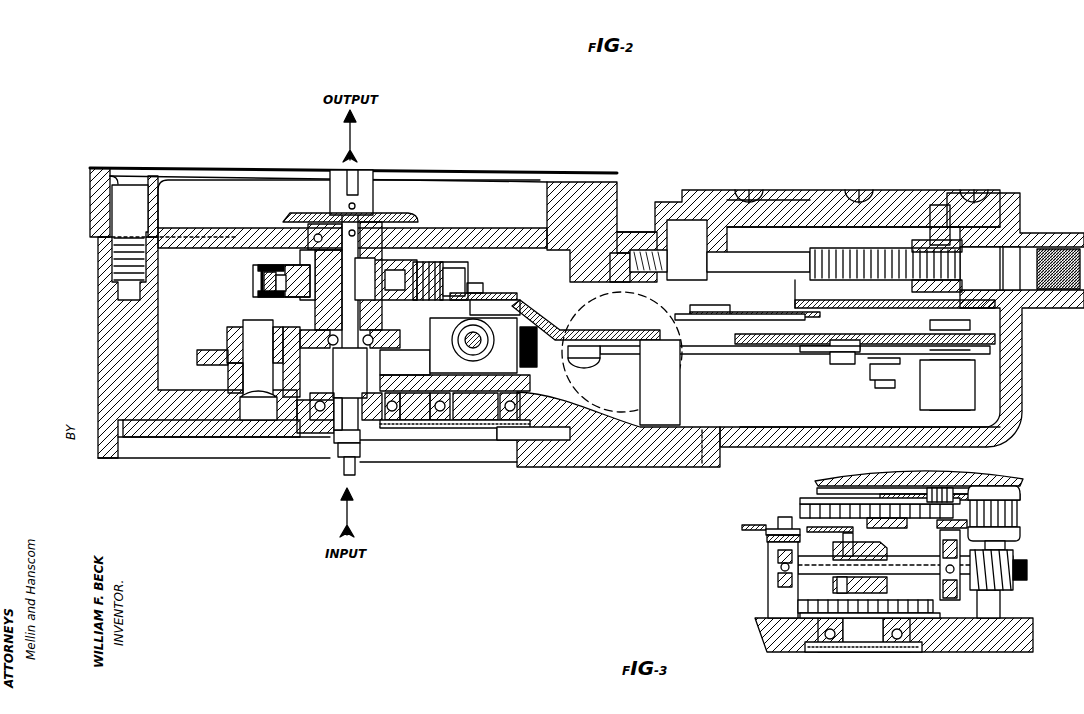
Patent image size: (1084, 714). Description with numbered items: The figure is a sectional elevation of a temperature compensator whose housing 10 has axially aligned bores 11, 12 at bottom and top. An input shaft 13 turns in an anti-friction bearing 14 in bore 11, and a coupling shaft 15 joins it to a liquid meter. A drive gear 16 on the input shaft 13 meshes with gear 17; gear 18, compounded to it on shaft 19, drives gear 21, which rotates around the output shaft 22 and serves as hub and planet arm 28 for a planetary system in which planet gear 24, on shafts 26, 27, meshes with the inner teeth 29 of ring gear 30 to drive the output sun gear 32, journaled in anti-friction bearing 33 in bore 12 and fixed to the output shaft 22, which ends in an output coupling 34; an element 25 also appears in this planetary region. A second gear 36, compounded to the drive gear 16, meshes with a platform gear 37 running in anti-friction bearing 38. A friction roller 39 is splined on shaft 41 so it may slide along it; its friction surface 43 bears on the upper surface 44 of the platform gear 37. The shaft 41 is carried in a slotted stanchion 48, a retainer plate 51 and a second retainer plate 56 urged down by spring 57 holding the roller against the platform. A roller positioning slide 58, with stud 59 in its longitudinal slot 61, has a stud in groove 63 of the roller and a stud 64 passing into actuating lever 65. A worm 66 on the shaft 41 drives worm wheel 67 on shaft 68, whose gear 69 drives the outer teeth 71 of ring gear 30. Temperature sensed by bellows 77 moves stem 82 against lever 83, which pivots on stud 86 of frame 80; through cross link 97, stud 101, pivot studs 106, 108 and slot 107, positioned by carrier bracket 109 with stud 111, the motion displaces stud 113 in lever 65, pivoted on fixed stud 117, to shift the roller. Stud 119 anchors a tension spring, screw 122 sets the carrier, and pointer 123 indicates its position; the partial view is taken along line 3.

In FIG. 2, the housing 10 is at (96, 288).
In FIG. 3, the housing 10 is at (1012, 472).
In FIG. 2, the bore 11 is at (390, 440).
In FIG. 2, the bore 12 is at (372, 226).
In FIG. 2, the input shaft 13 is at (330, 452).
In FIG. 2, the anti-friction bearing 14 is at (310, 430).
In FIG. 2, the coupling shaft 15 is at (358, 462).
In FIG. 2, the drive gear 16 is at (372, 358).
In FIG. 2, the gear 17 is at (205, 374).
In FIG. 2, the gear 18 is at (226, 343).
In FIG. 2, the shaft 19 is at (248, 360).
In FIG. 2, the gear 21 is at (306, 332).
In FIG. 2, the output shaft 22 is at (345, 348).
In FIG. 2, the planet gear 24 is at (430, 264).
In FIG. 2, the spring seat 25 is at (282, 292).
In FIG. 2, the shaft 26 is at (294, 270).
In FIG. 2, the shaft 27 is at (390, 300).
In FIG. 2, the planet arm 28 is at (266, 290).
In FIG. 2, the inner teeth 29 is at (278, 266).
In FIG. 2, the ring gear 30 is at (262, 270).
In FIG. 2, the output sun gear 32 is at (380, 268).
In FIG. 2, the anti-friction bearing 33 is at (322, 218).
In FIG. 2, the output coupling 34 is at (352, 172).
In FIG. 2, the second gear 36 is at (398, 420).
In FIG. 2, the platform gear 37 is at (545, 388).
In FIG. 3, the platform gear 37 is at (806, 625).
In FIG. 2, the anti-friction bearing 38 is at (495, 430).
In FIG. 3, the anti-friction bearing 38 is at (836, 630).
In FIG. 2, the friction roller 39 is at (455, 348).
In FIG. 3, the friction roller 39 is at (890, 582).
In FIG. 2, the shaft 41 is at (510, 305).
In FIG. 3, the shaft 41 is at (768, 565).
In FIG. 3, the friction surface 43 is at (833, 522).
In FIG. 3, the upper surface 44 is at (860, 630).
In FIG. 3, the stanchion 48 is at (768, 600).
In FIG. 3, the retainer plate 51 is at (767, 538).
In FIG. 2, the retainer plate 56 is at (524, 315).
In FIG. 2, the spring 57 is at (532, 344).
In FIG. 2, the roller positioning slide 58 is at (488, 300).
In FIG. 3, the roller positioning slide 58 is at (760, 524).
In FIG. 3, the stud 59 is at (789, 517).
In FIG. 3, the longitudinal slot 61 is at (785, 532).
In FIG. 3, the groove 63 is at (840, 578).
In FIG. 3, the stud 64 is at (930, 488).
In FIG. 2, the actuating lever 65 is at (540, 325).
In FIG. 3, the actuating lever 65 is at (888, 500).
In FIG. 3, the worm 66 is at (1020, 562).
In FIG. 3, the worm wheel 67 is at (1027, 574).
In FIG. 3, the shaft 68 is at (1015, 550).
In FIG. 2, the gear 69 is at (465, 262).
In FIG. 3, the gear 69 is at (1022, 516).
In FIG. 2, the outer teeth 71 is at (264, 281).
In FIG. 3, the outer teeth 71 is at (965, 490).
In FIG. 2, the bellows 77 is at (617, 303).
In FIG. 2, the frame 80 is at (770, 405).
In FIG. 2, the stem 82 is at (590, 358).
In FIG. 2, the lever 83 is at (735, 356).
In FIG. 2, the stud 86 is at (682, 382).
In FIG. 2, the cross link 97 is at (810, 332).
In FIG. 2, the stud 101 is at (826, 336).
In FIG. 2, the pivot stud 106 is at (955, 328).
In FIG. 2, the slot 107 is at (682, 316).
In FIG. 2, the pivot stud 108 is at (704, 306).
In FIG. 2, the carrier bracket 109 is at (800, 298).
In FIG. 2, the stud 111 is at (826, 276).
In FIG. 2, the stud 113 is at (838, 363).
In FIG. 2, the fixed stud 117 is at (922, 391).
In FIG. 2, the stud 119 is at (876, 380).
In FIG. 2, the screw 122 is at (752, 258).
In FIG. 2, the pointer 123 is at (935, 218).
In FIG. 2, the section line 3 is at (478, 283).